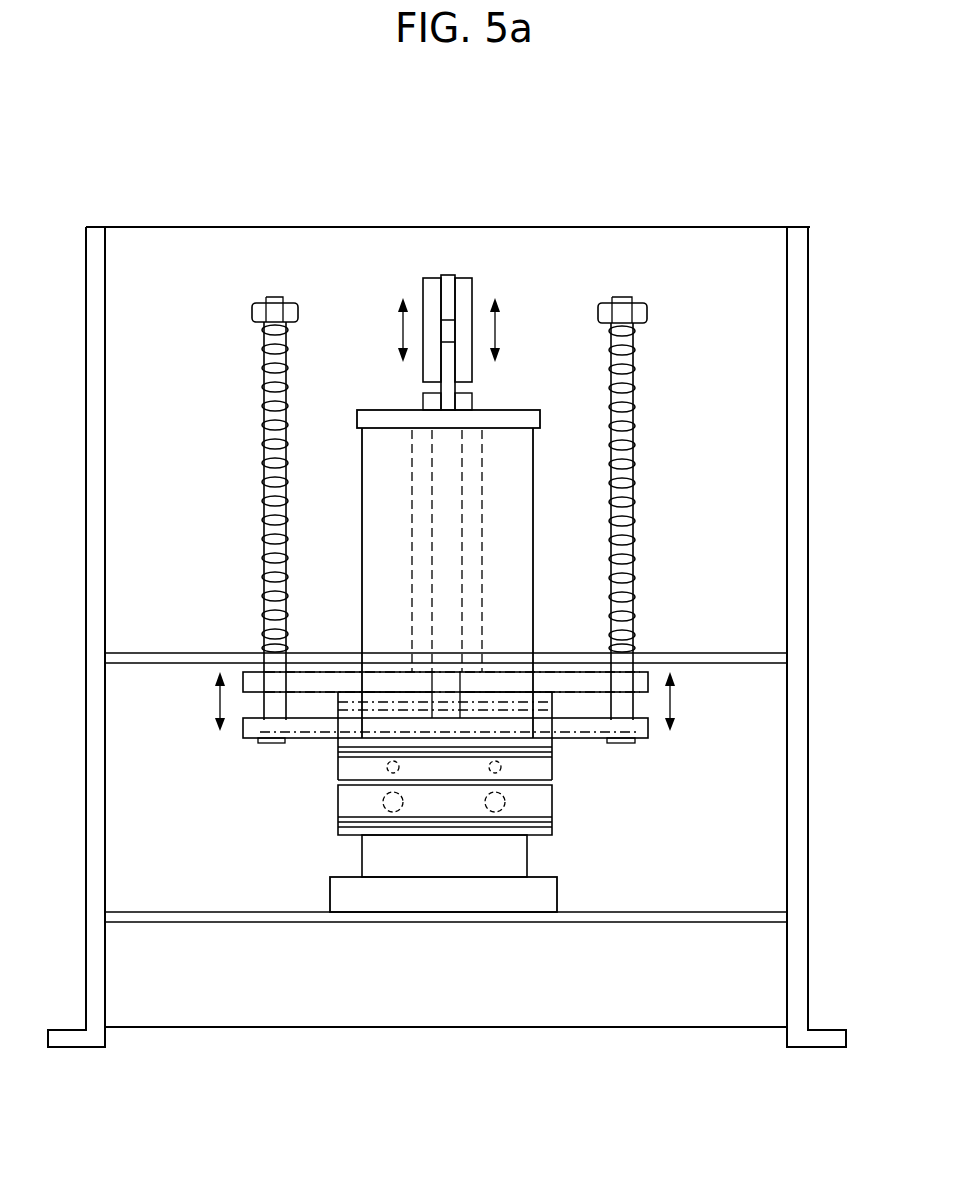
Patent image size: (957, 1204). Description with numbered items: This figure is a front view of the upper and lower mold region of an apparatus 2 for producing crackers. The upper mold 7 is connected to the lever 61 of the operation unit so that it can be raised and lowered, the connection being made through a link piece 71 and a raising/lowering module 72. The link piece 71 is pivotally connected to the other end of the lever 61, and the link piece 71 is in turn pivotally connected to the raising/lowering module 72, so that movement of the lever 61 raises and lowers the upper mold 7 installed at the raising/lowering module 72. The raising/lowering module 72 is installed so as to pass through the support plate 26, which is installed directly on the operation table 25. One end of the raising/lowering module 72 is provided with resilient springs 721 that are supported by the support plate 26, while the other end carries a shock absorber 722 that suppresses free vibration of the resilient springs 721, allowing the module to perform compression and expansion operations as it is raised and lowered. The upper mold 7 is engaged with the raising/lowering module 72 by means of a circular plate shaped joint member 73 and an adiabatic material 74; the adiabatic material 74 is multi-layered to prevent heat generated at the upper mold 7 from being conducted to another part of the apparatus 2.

The apparatus 2 is at (176, 182).
The upper mold 7 is at (528, 792).
The operation table 25 is at (748, 921).
The support plate 26 is at (748, 661).
The lever 61 is at (447, 277).
The link piece 71 is at (470, 292).
The raising/lowering module 72 is at (589, 440).
The joint member 73 is at (553, 745).
The adiabatic material 74 is at (553, 751).
The resilient springs 721 is at (266, 452).
The shock absorber 722 is at (473, 450).